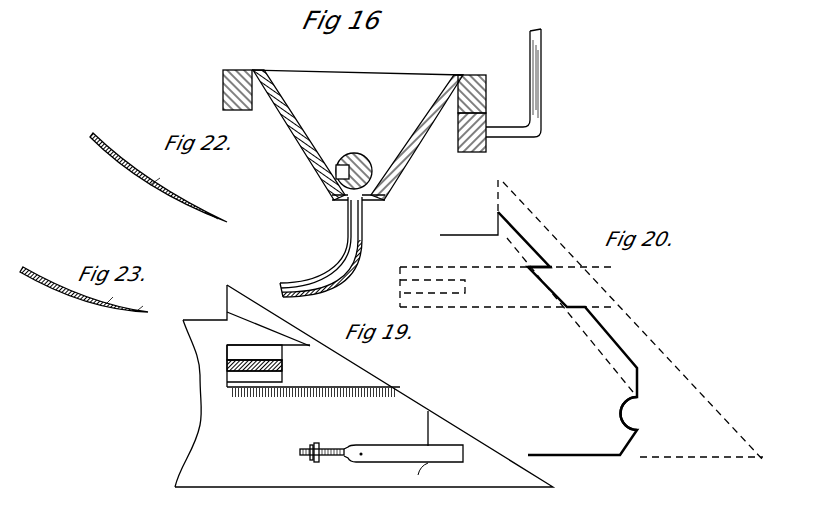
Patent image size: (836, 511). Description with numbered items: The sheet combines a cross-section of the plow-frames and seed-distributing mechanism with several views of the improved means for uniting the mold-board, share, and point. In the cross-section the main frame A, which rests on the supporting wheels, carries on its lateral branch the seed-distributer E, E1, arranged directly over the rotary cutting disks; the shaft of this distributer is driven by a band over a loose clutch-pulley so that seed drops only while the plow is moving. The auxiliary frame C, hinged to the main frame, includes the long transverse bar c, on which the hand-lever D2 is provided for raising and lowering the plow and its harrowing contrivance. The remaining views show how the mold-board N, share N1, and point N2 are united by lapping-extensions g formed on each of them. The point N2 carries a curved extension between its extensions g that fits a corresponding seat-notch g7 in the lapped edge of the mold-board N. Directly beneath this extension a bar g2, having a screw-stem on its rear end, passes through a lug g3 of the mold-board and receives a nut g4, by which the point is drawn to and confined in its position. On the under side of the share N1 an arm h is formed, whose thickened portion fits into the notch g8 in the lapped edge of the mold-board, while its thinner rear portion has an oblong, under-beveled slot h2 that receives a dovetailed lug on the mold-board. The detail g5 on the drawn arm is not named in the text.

In FIG. 16, the main frame A is at (355, 82).
In FIG. 16, the transverse bar c is at (472, 140).
In FIG. 16, the seed-distributer E is at (299, 135).
In FIG. 16, the auxiliary frame C is at (417, 137).
In FIG. 16, the seed-distributer shaft portion E1 is at (356, 169).
In FIG. 16, the hand-lever D2 is at (524, 83).
In FIG. 22, the mold-board N is at (158, 175).
In FIG. 23, the mold-board N is at (84, 289).
In FIG. 19, the mold-board N is at (313, 406).
In FIG. 20, the mold-board N is at (567, 333).
In FIG. 23, the share N1 is at (149, 300).
In FIG. 19, the share N1 is at (319, 356).
In FIG. 22, the point N2 is at (212, 206).
In FIG. 19, the point N2 is at (500, 441).
In FIG. 22, the lapping-extensions g is at (155, 188).
In FIG. 23, the lapping-extensions g is at (111, 309).
In FIG. 19, the lapping-extensions g is at (404, 441).
In FIG. 20, the lapping-extensions g is at (577, 296).
In FIG. 19, the bar g2 is at (403, 446).
In FIG. 20, the bar g2 is at (506, 287).
In FIG. 19, the lug g3 is at (324, 447).
In FIG. 19, the nut g4 is at (322, 443).
In FIG. 19, the packing strip g5 is at (254, 369).
In FIG. 20, the seat-notch g7 is at (634, 413).
In FIG. 20, the notch g8 is at (545, 278).
In FIG. 19, the arm h is at (268, 366).
In FIG. 19, the oblong slot h2 is at (254, 353).